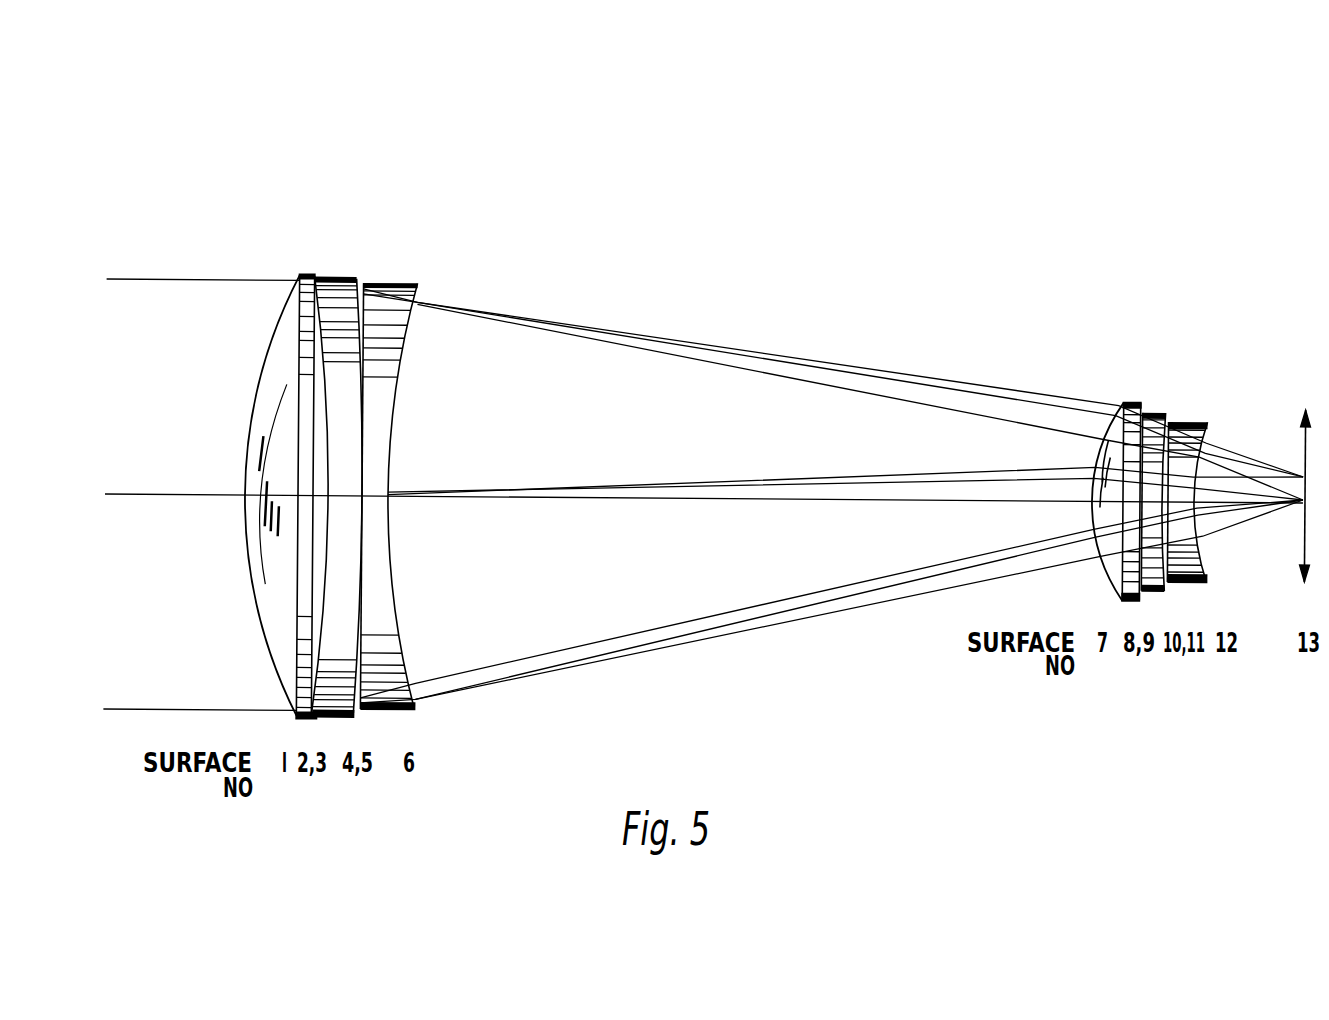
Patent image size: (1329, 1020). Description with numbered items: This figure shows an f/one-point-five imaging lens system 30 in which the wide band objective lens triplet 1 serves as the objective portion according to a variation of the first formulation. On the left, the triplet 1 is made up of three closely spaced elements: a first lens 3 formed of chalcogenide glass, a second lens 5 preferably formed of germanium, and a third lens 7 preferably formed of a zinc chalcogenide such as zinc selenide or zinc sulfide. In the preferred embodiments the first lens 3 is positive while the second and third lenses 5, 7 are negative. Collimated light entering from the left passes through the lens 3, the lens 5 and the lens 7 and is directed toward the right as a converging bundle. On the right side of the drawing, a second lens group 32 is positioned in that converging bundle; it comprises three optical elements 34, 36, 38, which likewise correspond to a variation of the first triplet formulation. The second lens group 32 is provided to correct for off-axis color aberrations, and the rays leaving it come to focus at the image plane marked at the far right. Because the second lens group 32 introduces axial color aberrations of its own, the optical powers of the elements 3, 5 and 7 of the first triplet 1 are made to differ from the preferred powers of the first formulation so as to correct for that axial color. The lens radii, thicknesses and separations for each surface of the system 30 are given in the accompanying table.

The wide band objective lens triplet 1 is at (403, 167).
The lens 3 is at (304, 274).
The lens 5 is at (335, 275).
The lens 7 is at (395, 283).
The imaging lens system 30 is at (853, 206).
The second lens group 32 is at (1167, 327).
The optical element 34 is at (1128, 403).
The optical element 36 is at (1158, 408).
The optical element 38 is at (1193, 419).